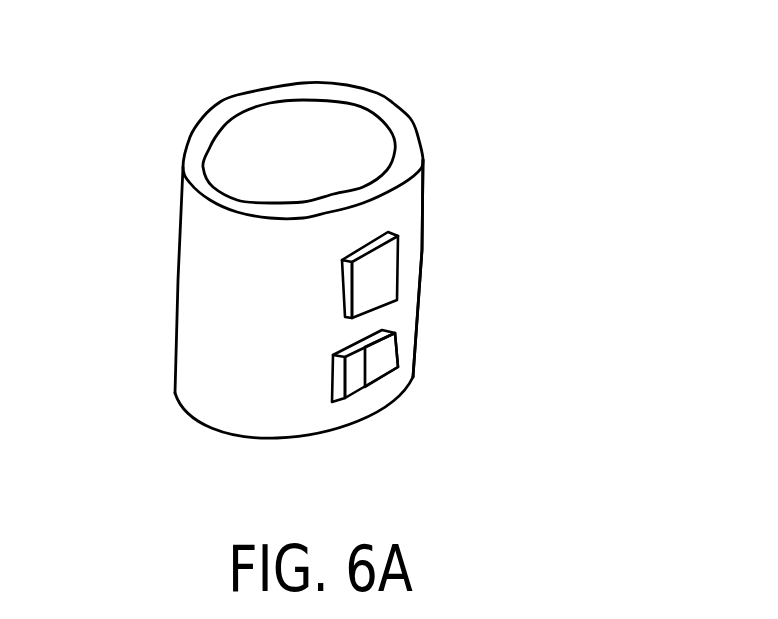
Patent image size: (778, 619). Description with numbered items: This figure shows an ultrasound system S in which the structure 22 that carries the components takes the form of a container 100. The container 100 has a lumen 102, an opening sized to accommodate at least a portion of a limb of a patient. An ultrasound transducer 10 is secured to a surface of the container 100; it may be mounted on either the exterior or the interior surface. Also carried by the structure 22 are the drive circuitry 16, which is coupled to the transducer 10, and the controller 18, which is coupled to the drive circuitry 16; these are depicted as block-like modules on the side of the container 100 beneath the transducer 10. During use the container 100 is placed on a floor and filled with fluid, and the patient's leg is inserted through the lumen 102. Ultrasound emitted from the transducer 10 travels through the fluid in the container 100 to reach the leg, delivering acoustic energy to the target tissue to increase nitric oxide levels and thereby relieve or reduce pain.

The container 100 is at (195, 278).
The lumen 102 is at (308, 132).
The structure 22 is at (423, 192).
The ultrasound system S is at (564, 149).
The ultrasound transducer 10 is at (390, 272).
The drive circuitry 16 is at (347, 397).
The controller 18 is at (388, 363).